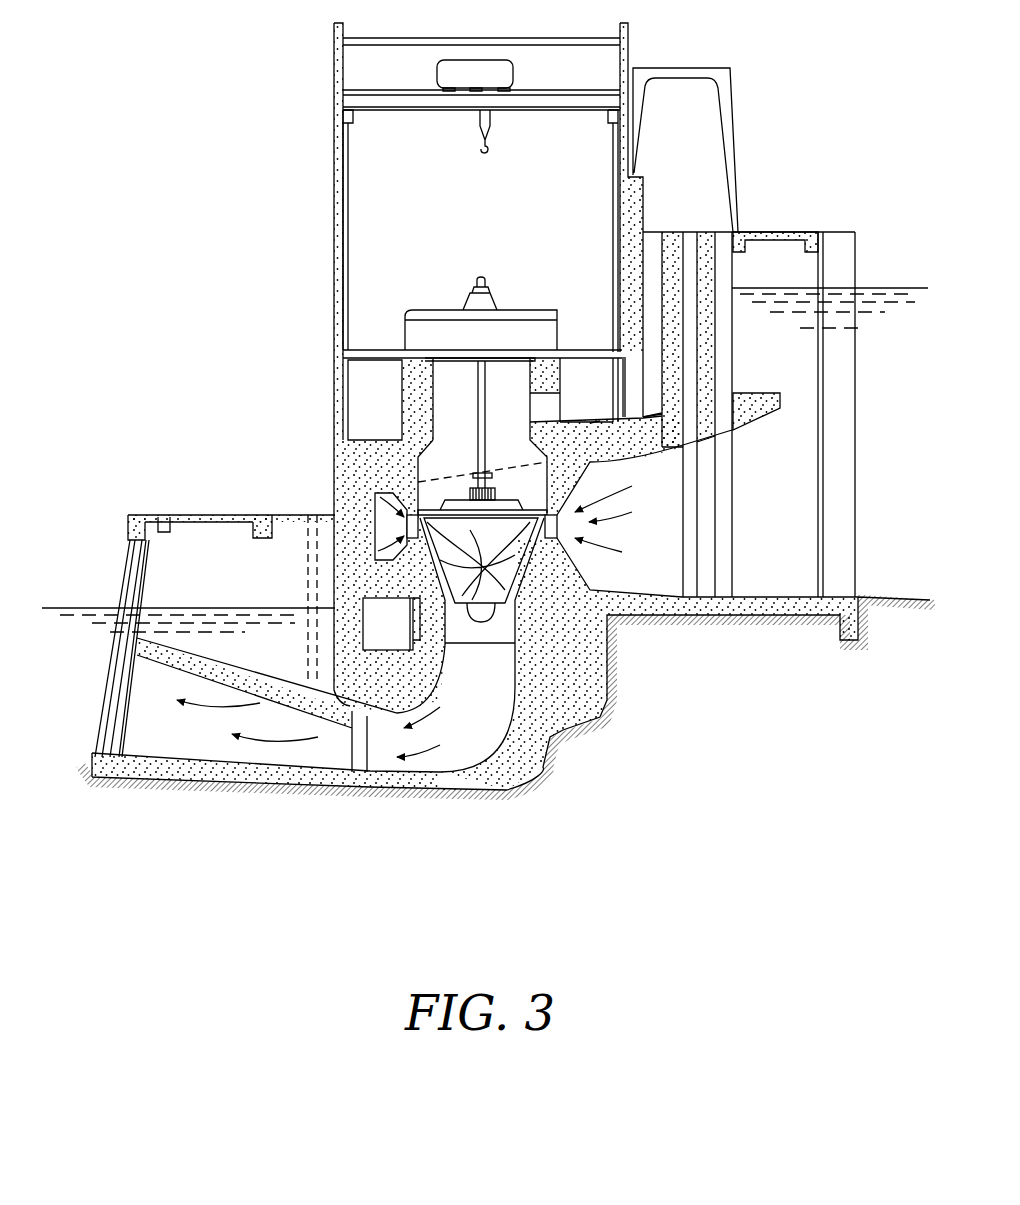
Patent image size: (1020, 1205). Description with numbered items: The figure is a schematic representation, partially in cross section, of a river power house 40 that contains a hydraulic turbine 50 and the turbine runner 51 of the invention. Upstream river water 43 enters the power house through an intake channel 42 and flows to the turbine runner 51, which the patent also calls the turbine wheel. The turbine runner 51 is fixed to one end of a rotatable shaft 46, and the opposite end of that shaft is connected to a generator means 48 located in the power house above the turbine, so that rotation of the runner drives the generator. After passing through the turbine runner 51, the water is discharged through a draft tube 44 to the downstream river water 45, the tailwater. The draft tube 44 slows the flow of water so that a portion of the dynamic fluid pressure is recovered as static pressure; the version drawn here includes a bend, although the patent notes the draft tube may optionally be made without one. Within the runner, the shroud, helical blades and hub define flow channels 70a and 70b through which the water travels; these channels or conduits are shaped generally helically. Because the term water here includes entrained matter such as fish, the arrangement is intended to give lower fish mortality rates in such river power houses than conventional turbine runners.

The river power house 40 is at (226, 201).
The intake channel 42 is at (650, 455).
The upstream river water 43 is at (890, 288).
The draft tube 44 is at (180, 665).
The downstream river water 45 is at (76, 607).
The rotatable shaft 46 is at (472, 418).
The generator means 48 is at (447, 330).
The hydraulic turbine 50 is at (500, 626).
The turbine runner 51 is at (396, 518).
The flow channel 70a is at (440, 540).
The flow channel 70b is at (503, 597).